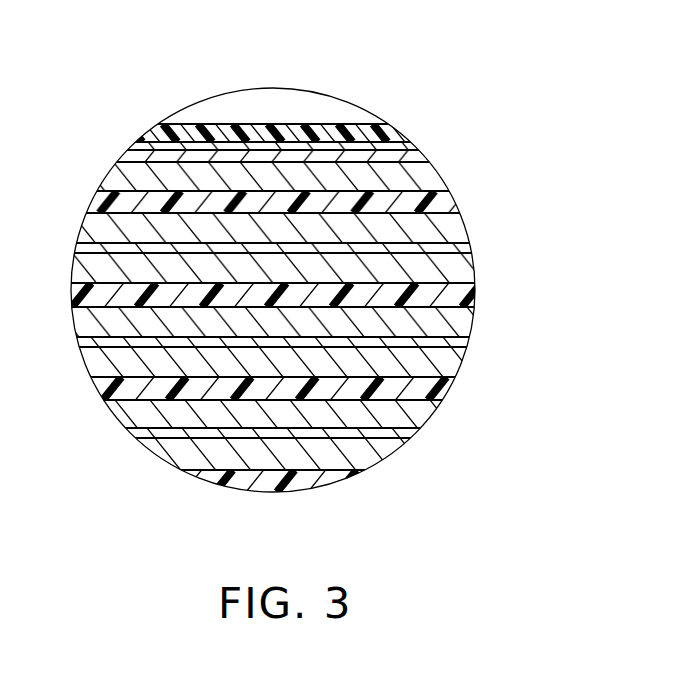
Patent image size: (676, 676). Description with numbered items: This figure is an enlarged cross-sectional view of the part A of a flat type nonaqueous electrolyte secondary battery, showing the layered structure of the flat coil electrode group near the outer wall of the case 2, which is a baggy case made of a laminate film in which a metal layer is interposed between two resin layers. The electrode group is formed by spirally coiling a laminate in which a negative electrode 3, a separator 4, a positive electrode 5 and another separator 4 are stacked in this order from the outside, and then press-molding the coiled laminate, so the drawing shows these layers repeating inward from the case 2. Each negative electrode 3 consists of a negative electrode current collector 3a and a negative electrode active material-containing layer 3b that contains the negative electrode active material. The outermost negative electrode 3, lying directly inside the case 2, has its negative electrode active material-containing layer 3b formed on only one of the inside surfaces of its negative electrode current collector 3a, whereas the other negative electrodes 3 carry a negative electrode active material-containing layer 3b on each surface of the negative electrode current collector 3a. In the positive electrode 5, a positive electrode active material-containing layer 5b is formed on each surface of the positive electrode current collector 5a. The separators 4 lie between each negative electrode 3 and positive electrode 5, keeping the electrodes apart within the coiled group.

The part A is at (177, 112).
The case 2 is at (410, 133).
The negative electrode 3 is at (515, 127).
The negative electrode current collector 3a is at (412, 157).
The negative electrode active material-containing layer 3b is at (427, 177).
The separator 4 is at (105, 207).
The positive electrode 5 is at (532, 197).
The positive electrode current collector 5a is at (458, 252).
The positive electrode active material-containing layer 5b is at (455, 229).